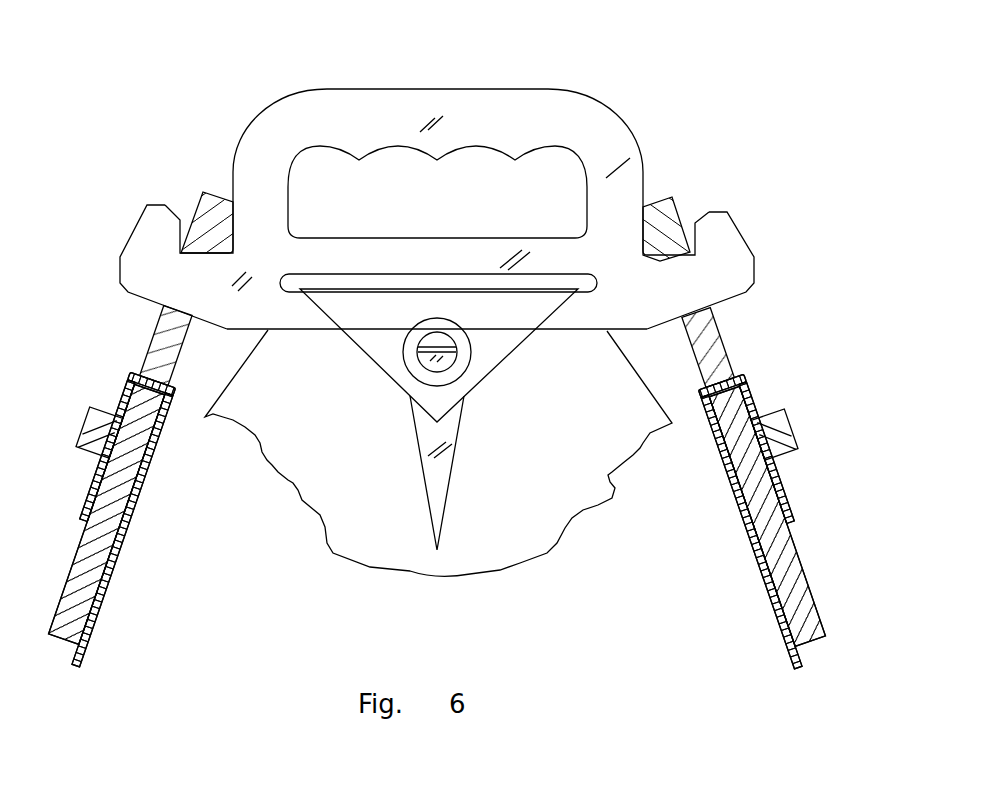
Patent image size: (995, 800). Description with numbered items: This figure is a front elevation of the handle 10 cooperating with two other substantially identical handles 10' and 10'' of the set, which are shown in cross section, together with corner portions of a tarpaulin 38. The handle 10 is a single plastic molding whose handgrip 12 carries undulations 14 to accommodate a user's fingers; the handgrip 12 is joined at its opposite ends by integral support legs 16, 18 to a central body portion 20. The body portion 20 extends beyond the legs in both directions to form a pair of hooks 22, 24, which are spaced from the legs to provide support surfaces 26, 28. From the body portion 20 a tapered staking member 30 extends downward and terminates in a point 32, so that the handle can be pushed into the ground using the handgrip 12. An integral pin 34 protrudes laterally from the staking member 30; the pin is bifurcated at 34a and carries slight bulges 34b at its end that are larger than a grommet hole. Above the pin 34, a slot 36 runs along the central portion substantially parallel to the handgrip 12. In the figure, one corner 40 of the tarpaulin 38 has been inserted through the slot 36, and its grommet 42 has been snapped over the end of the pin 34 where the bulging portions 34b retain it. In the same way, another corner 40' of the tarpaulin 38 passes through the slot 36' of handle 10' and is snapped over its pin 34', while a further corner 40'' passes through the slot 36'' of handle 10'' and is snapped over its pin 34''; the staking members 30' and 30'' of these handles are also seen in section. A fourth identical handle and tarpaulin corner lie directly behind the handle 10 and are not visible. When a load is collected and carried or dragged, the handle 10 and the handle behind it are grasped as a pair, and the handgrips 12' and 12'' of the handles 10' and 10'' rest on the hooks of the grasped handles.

The handle 10 is at (465, 250).
The handgrip 12 is at (437, 63).
The undulations 14 is at (373, 156).
The support leg 16 is at (261, 117).
The support leg 18 is at (645, 167).
The central body portion 20 is at (453, 237).
The hook 22 is at (133, 238).
The hook 24 is at (740, 237).
The support surface 26 is at (180, 213).
The support surface 28 is at (697, 223).
The staking member 30 is at (466, 464).
The point 32 is at (438, 540).
The pin 34 is at (462, 341).
The bifurcation 34a is at (427, 340).
The bulges 34b is at (423, 378).
The slot 36 is at (438, 244).
The tarpaulin 38 is at (367, 478).
The corner 40 is at (439, 355).
The grommet 42 is at (422, 313).
The handle 10' is at (104, 510).
The handgrip 12' is at (186, 264).
The staking member 30' is at (95, 514).
The pin 34' is at (79, 428).
The slot 36' is at (179, 373).
The corner 40' is at (103, 523).
The handle 10'' is at (788, 517).
The handgrip 12'' is at (688, 266).
The staking member 30'' is at (787, 516).
The pin 34'' is at (814, 431).
The slot 36'' is at (750, 358).
The corner 40'' is at (783, 525).